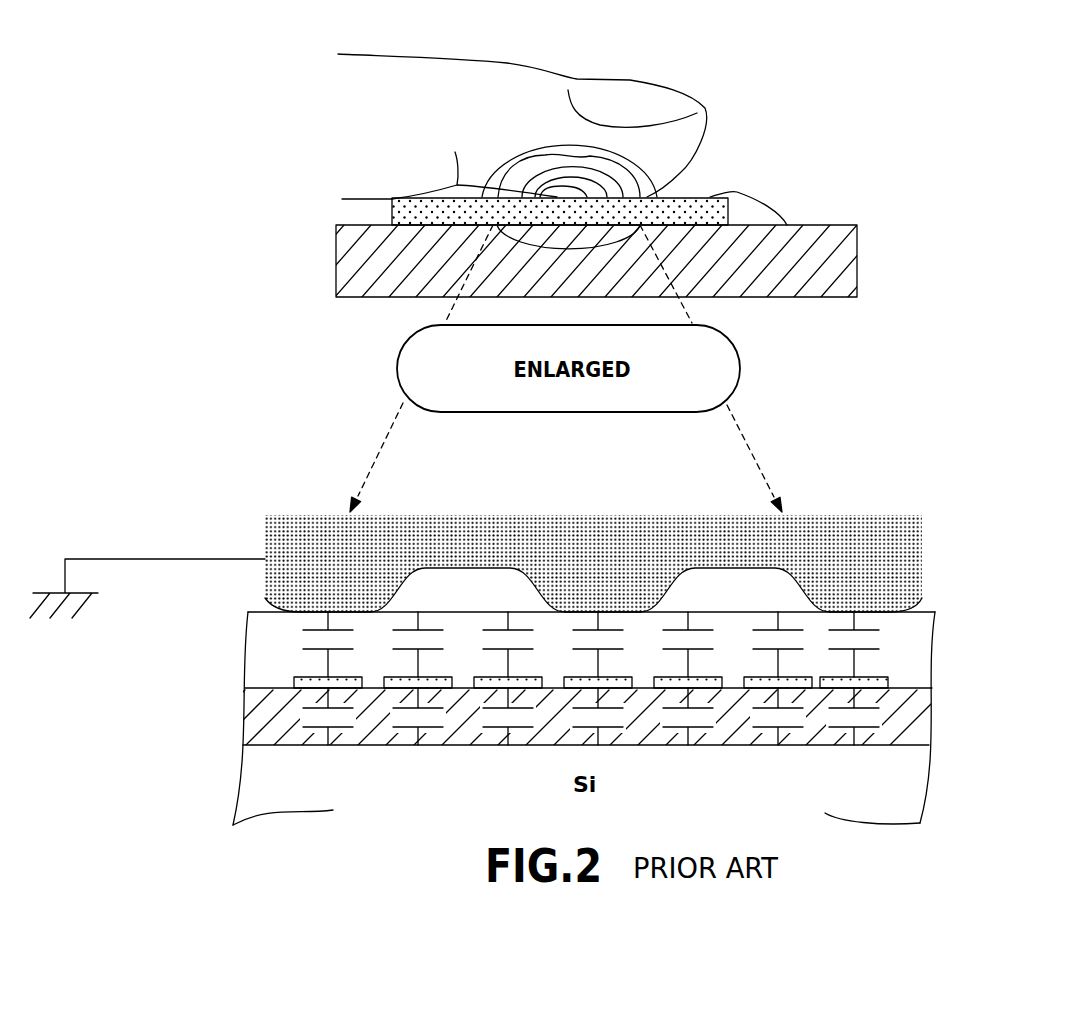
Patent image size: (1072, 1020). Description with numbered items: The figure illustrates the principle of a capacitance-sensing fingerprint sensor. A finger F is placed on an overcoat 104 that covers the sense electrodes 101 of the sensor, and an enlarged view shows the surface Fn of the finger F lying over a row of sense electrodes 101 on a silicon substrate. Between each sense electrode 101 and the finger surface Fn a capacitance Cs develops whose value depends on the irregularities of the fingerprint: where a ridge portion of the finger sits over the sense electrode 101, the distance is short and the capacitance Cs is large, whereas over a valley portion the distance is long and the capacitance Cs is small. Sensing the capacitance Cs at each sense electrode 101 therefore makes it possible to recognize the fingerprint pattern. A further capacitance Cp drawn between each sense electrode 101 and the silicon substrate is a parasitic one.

The finger F is at (497, 73).
The sense electrode 101 is at (693, 198).
The overcoat 104 is at (917, 663).
The surface of the finger Fn is at (916, 610).
The capacitance Cs is at (293, 645).
The parasitic capacitance Cp is at (295, 718).